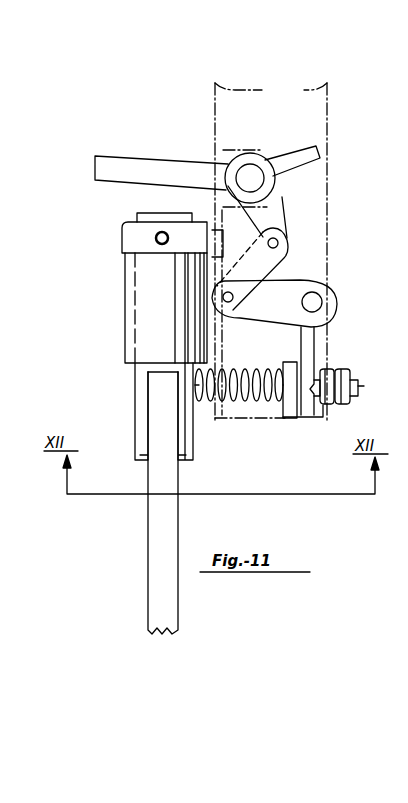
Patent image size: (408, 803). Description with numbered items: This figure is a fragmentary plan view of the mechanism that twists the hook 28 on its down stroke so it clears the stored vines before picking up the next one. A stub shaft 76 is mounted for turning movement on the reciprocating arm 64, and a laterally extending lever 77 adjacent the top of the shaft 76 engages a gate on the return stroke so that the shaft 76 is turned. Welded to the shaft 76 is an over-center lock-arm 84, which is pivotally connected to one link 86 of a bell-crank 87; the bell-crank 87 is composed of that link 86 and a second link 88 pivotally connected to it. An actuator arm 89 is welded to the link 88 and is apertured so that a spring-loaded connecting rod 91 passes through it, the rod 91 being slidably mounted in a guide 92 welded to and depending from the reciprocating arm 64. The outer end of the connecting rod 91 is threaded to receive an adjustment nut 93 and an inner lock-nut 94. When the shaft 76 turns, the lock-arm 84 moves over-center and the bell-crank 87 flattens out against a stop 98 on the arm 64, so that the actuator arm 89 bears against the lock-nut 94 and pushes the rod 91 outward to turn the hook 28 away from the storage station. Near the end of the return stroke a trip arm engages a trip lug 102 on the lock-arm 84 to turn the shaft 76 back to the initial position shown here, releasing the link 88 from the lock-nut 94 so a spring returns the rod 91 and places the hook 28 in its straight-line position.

The hook 28 is at (151, 563).
The reciprocating arm 64 is at (270, 121).
The stub shaft 76 is at (253, 174).
The lever 77 is at (160, 170).
The over-center lock-arm 84 is at (283, 218).
The link 86 is at (279, 268).
The bell-crank 87 is at (363, 285).
The link 88 is at (266, 314).
The actuator arm 89 is at (323, 342).
The connecting rod 91 is at (360, 386).
The guide 92 is at (289, 421).
The adjustment nut 93 is at (343, 375).
The lock-nut 94 is at (323, 371).
The stop 98 is at (214, 238).
The trip lug 102 is at (321, 155).